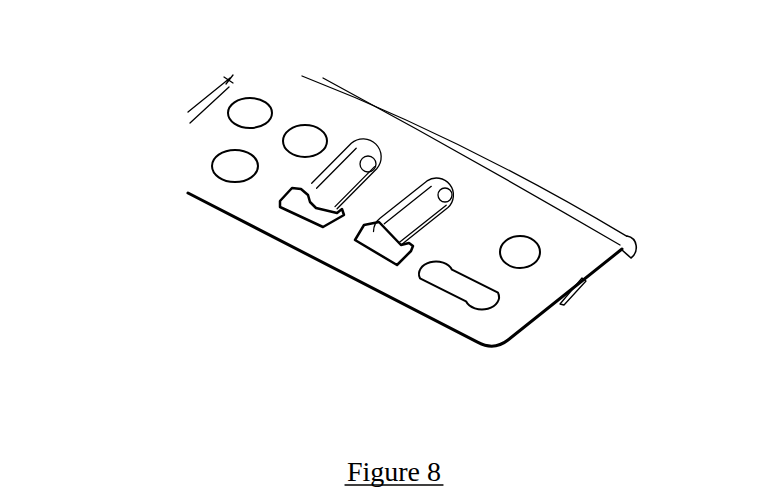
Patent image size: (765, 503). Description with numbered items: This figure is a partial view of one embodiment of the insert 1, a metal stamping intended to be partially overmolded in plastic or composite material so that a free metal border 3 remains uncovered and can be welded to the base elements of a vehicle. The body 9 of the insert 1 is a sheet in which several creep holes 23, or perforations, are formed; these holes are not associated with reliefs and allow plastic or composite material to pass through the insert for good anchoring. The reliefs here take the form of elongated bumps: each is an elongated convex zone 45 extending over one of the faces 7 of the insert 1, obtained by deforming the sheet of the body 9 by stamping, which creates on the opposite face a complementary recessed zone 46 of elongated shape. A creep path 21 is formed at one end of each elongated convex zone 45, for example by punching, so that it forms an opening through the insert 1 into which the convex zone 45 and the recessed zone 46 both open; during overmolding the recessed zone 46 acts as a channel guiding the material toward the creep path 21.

The insert 1 is at (572, 361).
The metal border 3 is at (623, 253).
The face of the insert 7 is at (359, 109).
The body of the insert 9 is at (499, 212).
The creep path 21 is at (300, 205).
The creep hole 23 is at (233, 172).
The elongated convex zone 45 is at (423, 197).
The recessed zone 46 is at (348, 183).